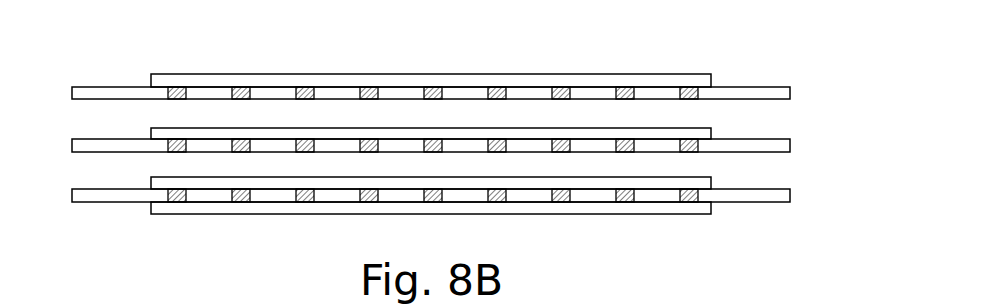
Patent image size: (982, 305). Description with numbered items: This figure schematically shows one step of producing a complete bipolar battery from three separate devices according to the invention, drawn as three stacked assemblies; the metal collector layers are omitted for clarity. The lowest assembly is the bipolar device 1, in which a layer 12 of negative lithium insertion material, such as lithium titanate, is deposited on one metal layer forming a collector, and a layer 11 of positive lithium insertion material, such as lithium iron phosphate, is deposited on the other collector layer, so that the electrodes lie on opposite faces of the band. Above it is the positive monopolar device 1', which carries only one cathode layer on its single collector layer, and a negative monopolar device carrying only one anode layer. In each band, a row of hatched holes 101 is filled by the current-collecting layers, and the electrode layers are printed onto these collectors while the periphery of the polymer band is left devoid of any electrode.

The bipolar device 1 is at (445, 238).
The positive monopolar device 1' is at (452, 106).
The layer of positive lithium insertion material 11 is at (593, 207).
The layer of negative lithium insertion material 12 is at (525, 184).
The holes 101 is at (430, 88).